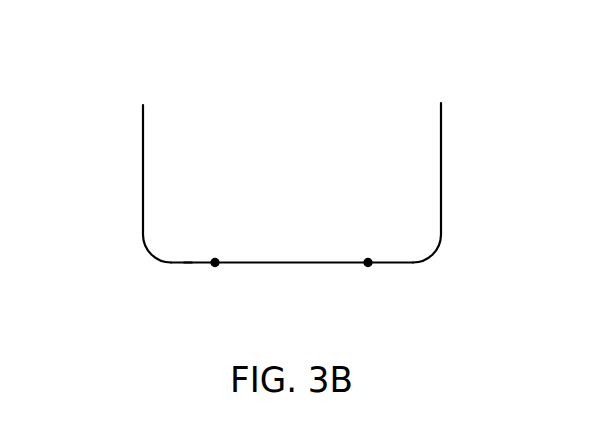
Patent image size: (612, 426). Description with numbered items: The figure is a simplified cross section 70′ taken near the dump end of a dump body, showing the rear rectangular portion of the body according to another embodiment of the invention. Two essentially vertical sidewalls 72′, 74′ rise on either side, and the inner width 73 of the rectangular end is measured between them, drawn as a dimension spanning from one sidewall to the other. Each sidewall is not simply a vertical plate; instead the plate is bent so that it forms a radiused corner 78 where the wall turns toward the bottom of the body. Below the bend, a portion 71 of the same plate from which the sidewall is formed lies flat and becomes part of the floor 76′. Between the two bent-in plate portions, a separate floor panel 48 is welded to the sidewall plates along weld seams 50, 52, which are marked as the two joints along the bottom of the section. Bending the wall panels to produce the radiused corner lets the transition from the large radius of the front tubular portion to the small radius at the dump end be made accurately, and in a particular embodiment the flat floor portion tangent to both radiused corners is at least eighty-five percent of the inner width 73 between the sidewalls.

The simplified cross section 70′ is at (292, 180).
The sidewall 72′ is at (142, 143).
The sidewall 74′ is at (442, 142).
The inner width 73 is at (441, 127).
The floor 76′ is at (312, 217).
The radiused corner 78 is at (153, 256).
The portion of the plate 71 is at (188, 262).
The floor panel 48 is at (293, 262).
The weld seam 50 is at (215, 266).
The weld seam 52 is at (368, 259).